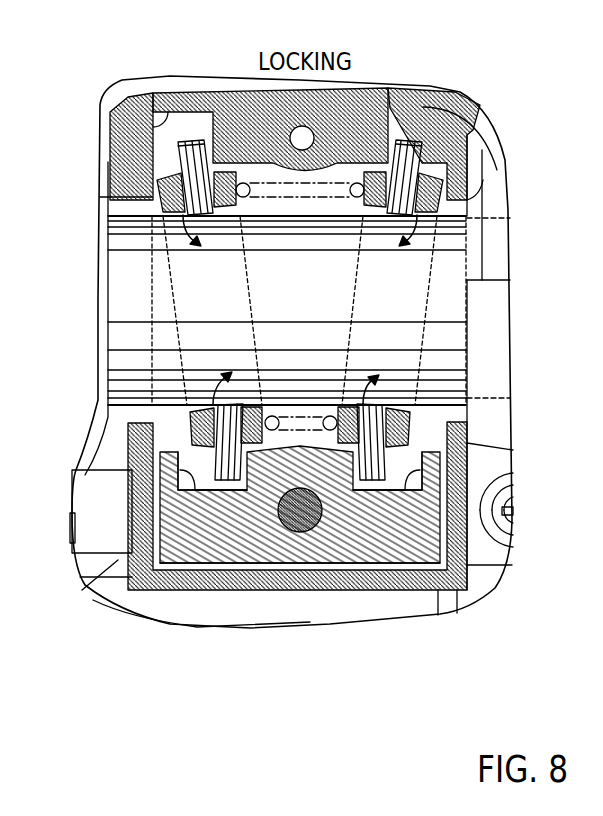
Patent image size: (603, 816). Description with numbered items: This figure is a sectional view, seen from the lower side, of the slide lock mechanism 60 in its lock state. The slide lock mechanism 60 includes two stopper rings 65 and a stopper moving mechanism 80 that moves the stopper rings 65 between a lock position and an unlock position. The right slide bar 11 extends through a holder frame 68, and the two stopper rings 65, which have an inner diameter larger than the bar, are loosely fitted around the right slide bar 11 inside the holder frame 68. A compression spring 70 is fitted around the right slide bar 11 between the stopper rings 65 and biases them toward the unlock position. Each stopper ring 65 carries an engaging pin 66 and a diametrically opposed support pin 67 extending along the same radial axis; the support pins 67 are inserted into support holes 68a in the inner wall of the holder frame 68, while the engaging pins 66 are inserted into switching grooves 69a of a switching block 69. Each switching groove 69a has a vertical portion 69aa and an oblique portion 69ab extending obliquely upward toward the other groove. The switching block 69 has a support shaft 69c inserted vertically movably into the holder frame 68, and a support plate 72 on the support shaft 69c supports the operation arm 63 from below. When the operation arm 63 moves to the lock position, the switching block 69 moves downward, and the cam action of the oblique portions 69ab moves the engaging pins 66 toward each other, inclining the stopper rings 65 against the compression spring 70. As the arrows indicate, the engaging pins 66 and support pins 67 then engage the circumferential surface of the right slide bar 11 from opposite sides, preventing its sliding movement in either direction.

The right slide bar 11 is at (302, 333).
The operation arm 63 is at (107, 543).
The stopper ring 65 is at (192, 415).
The engaging pin 66 is at (212, 405).
The support pin 67 is at (198, 143).
The holder frame 68 is at (243, 590).
The support hole 68a is at (158, 98).
The switching block 69 is at (353, 537).
The switching groove 69a is at (187, 684).
The vertical portion 69aa is at (190, 490).
The oblique portion 69ab is at (217, 490).
The support shaft 69c is at (316, 520).
The compression spring 70 is at (340, 183).
The support plate 72 is at (300, 563).
The stopper moving mechanism 80 is at (338, 591).
The slide lock mechanism 60 is at (238, 665).